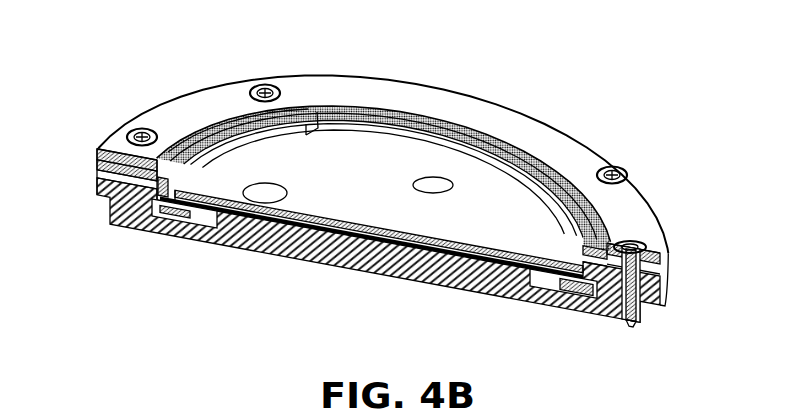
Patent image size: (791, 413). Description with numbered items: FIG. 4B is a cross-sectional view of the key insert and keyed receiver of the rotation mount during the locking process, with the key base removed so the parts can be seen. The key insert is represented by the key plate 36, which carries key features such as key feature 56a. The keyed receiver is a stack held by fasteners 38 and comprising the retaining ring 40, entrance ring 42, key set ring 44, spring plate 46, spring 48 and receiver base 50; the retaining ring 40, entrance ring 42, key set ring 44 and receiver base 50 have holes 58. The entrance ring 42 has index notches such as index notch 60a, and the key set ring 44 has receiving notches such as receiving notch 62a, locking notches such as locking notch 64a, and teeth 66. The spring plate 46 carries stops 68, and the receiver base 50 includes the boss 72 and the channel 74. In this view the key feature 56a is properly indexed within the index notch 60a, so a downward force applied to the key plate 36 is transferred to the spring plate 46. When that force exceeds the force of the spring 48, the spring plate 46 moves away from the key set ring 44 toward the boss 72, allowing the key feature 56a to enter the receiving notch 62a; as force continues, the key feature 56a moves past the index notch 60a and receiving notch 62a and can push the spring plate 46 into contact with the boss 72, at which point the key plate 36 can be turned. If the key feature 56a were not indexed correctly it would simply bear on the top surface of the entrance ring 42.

The key plate 36 is at (386, 176).
The fasteners 38 is at (636, 244).
The retaining ring 40 is at (97, 151).
The entrance ring 42 is at (97, 160).
The key set ring 44 is at (97, 171).
The spring plate 46 is at (97, 181).
The spring 48 is at (160, 226).
The receiver base 50 is at (170, 222).
The key feature 56a is at (396, 142).
The holes 58 is at (640, 305).
The index notch 60a is at (346, 112).
The receiving notch 62a is at (373, 127).
The locking notch 64a is at (222, 148).
The teeth 66 is at (301, 120).
The stops 68 is at (163, 182).
The boss 72 is at (388, 248).
The channel 74 is at (552, 282).